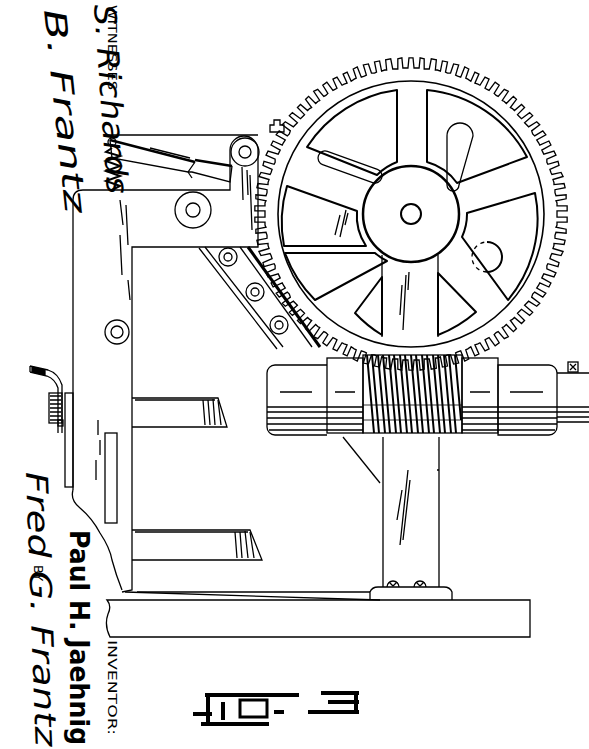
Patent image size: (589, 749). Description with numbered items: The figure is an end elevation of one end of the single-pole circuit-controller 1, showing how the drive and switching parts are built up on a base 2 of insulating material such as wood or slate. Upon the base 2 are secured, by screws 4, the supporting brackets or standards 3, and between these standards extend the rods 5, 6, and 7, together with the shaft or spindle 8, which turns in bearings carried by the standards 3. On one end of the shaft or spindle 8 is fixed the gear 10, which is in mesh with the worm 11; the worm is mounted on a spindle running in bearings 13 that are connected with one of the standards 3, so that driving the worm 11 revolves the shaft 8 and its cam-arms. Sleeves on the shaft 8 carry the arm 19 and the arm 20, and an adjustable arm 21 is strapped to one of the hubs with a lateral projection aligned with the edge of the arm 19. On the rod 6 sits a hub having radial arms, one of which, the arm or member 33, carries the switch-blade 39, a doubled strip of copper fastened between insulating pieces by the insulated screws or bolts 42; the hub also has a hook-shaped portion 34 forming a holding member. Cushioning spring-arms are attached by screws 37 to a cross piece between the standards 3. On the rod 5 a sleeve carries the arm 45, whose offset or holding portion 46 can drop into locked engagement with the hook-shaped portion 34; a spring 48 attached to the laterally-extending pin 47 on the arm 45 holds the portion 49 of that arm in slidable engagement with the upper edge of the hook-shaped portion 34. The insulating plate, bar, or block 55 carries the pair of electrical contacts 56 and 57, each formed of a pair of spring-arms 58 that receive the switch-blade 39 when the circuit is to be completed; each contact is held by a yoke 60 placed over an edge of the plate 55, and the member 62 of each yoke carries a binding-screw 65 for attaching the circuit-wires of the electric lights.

The single-pole circuit-controller 1 is at (455, 491).
The base 2 is at (388, 623).
The supporting brackets or standards 3 is at (123, 383).
The screws 4 is at (406, 528).
The rod 5 is at (245, 138).
The rod 6 is at (186, 212).
The rod 7 is at (129, 332).
The shaft or spindle 8 is at (412, 208).
The gear 10 is at (487, 103).
The worm 11 is at (440, 433).
The bearings 13 is at (293, 418).
The arm 19 is at (353, 167).
The arm 20 is at (460, 153).
The arm 21 is at (473, 233).
The arm or member 33 is at (252, 315).
The hook-shaped portion 34 is at (192, 176).
The screws 37 is at (276, 120).
The switch-blade 39 is at (354, 467).
The insulated screws or bolts 42 is at (250, 292).
The arm 45 is at (142, 143).
The offset or holding portion 46 is at (195, 162).
The laterally-extending pin 47 is at (112, 138).
The spring 48 is at (110, 190).
The portion of arm 49 is at (170, 149).
The insulating plate, bar, or block 55 is at (68, 468).
The electrical contact 56 is at (194, 398).
The electrical contact 57 is at (214, 536).
The spring-arms 58 is at (168, 418).
The yoke 60 is at (68, 392).
The yoke member 62 is at (62, 426).
The binding-screw 65 is at (49, 410).